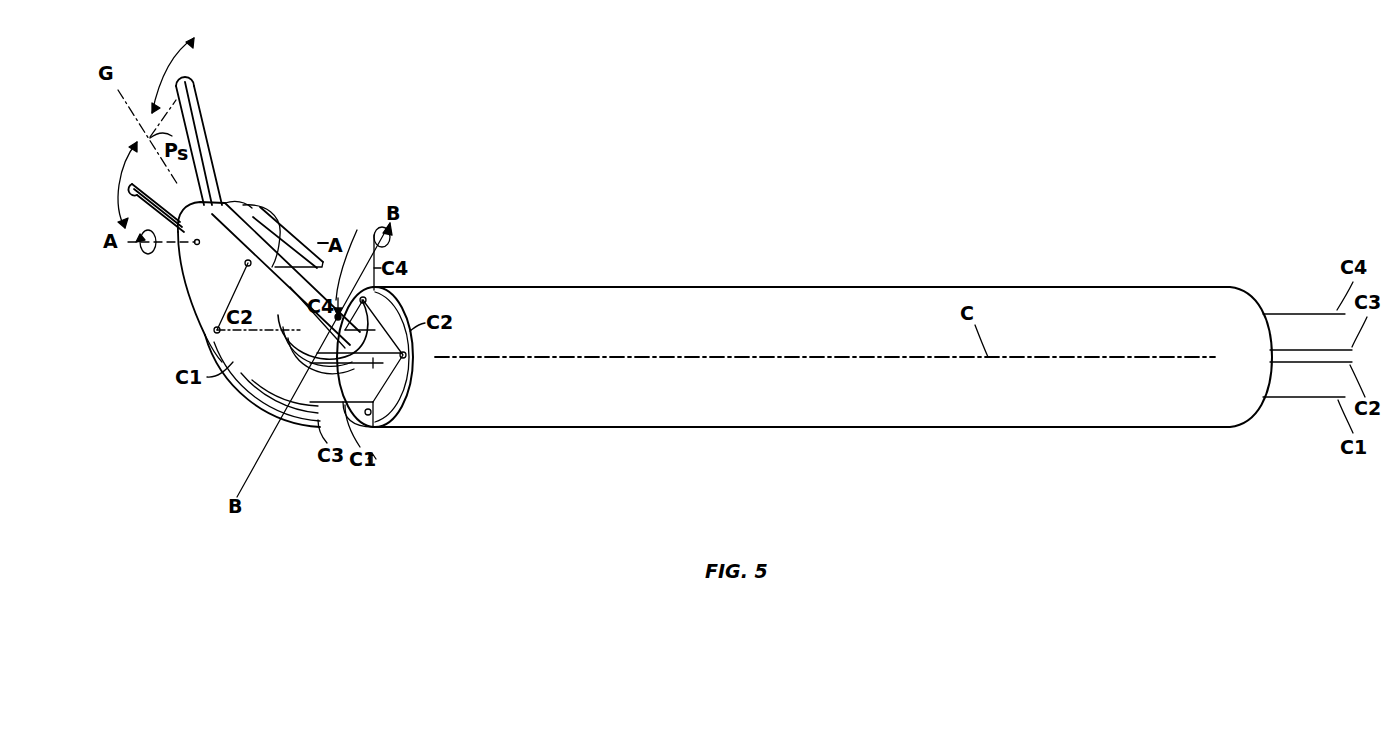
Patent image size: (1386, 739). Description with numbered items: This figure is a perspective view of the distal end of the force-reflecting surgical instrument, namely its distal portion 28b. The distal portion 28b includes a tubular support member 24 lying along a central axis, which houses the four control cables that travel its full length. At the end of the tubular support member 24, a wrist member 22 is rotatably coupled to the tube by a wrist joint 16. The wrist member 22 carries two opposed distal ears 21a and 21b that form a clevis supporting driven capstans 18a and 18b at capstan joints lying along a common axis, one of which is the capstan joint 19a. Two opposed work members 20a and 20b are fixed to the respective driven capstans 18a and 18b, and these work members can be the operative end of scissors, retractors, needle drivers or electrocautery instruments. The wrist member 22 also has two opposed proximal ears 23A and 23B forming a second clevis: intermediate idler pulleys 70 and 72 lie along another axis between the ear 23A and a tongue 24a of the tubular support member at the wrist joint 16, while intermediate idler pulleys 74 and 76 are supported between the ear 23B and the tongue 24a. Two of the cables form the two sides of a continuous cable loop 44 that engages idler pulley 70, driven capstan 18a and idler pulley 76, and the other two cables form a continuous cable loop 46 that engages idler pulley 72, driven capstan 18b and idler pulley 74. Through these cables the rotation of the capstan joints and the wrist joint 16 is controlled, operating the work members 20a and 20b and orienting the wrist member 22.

The wrist joint 16 is at (338, 303).
The driven capstan 18a is at (240, 196).
The driven capstan 18b is at (262, 210).
The capstan joint 19a is at (193, 247).
The work member 20a is at (120, 196).
The work member 20b is at (202, 110).
The distal ear 21a is at (197, 283).
The distal ear 21b is at (304, 227).
The wrist member 22 is at (195, 300).
The proximal ear 23A is at (250, 400).
The proximal ear 23B is at (356, 253).
The tubular support member 24 is at (494, 430).
The tongue 24a is at (412, 380).
The distal portion 28b is at (898, 170).
The cable loop 44 is at (1278, 364).
The cable loop 46 is at (1278, 312).
The intermediate idler pulley 70 is at (258, 412).
The intermediate idler pulley 72 is at (293, 423).
The intermediate idler pulley 74 is at (283, 342).
The intermediate idler pulley 76 is at (313, 360).